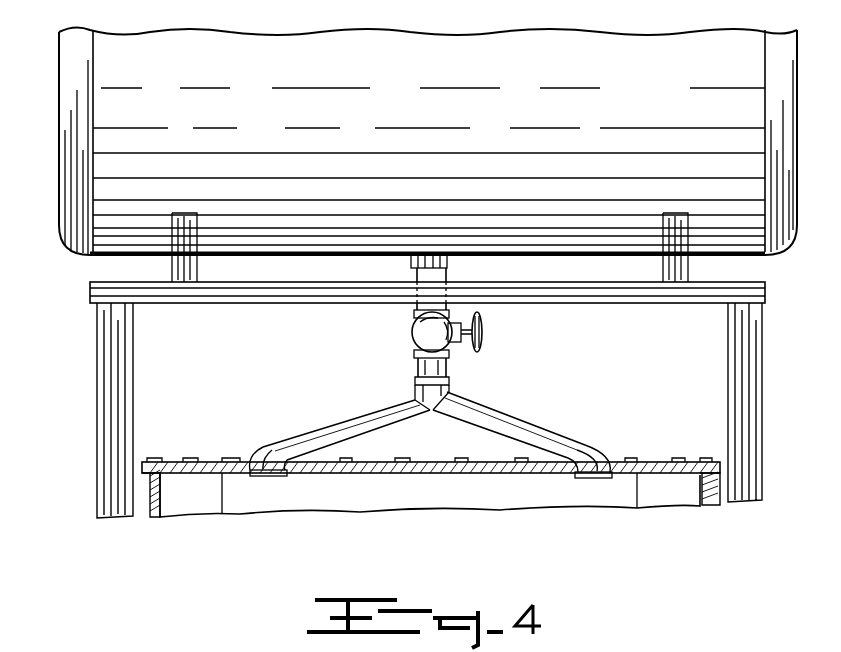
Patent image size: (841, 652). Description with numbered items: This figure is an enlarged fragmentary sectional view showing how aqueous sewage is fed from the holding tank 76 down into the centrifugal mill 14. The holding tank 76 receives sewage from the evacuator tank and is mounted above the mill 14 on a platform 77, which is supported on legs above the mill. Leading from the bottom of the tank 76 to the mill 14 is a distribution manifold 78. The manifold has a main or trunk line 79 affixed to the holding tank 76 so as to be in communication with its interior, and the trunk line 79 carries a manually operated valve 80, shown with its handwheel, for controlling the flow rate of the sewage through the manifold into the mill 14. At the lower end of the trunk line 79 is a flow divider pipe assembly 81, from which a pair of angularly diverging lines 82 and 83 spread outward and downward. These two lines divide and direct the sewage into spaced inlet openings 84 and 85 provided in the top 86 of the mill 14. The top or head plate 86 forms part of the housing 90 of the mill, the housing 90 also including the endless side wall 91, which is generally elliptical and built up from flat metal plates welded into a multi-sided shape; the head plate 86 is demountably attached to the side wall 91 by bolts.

The centrifugal mill 14 is at (645, 522).
The holding tank 76 is at (60, 218).
The platform 77 is at (90, 296).
The distribution manifold 78 is at (412, 393).
The trunk line 79 is at (418, 364).
The manually operated valve 80 is at (487, 335).
The flow divider pipe assembly 81 is at (455, 388).
The angularly diverging line 82 is at (312, 437).
The angularly diverging line 83 is at (531, 424).
The inlet opening 84 is at (243, 462).
The inlet opening 85 is at (615, 462).
The top or head plate 86 is at (447, 462).
The housing 90 is at (148, 508).
The endless side wall 91 is at (697, 505).